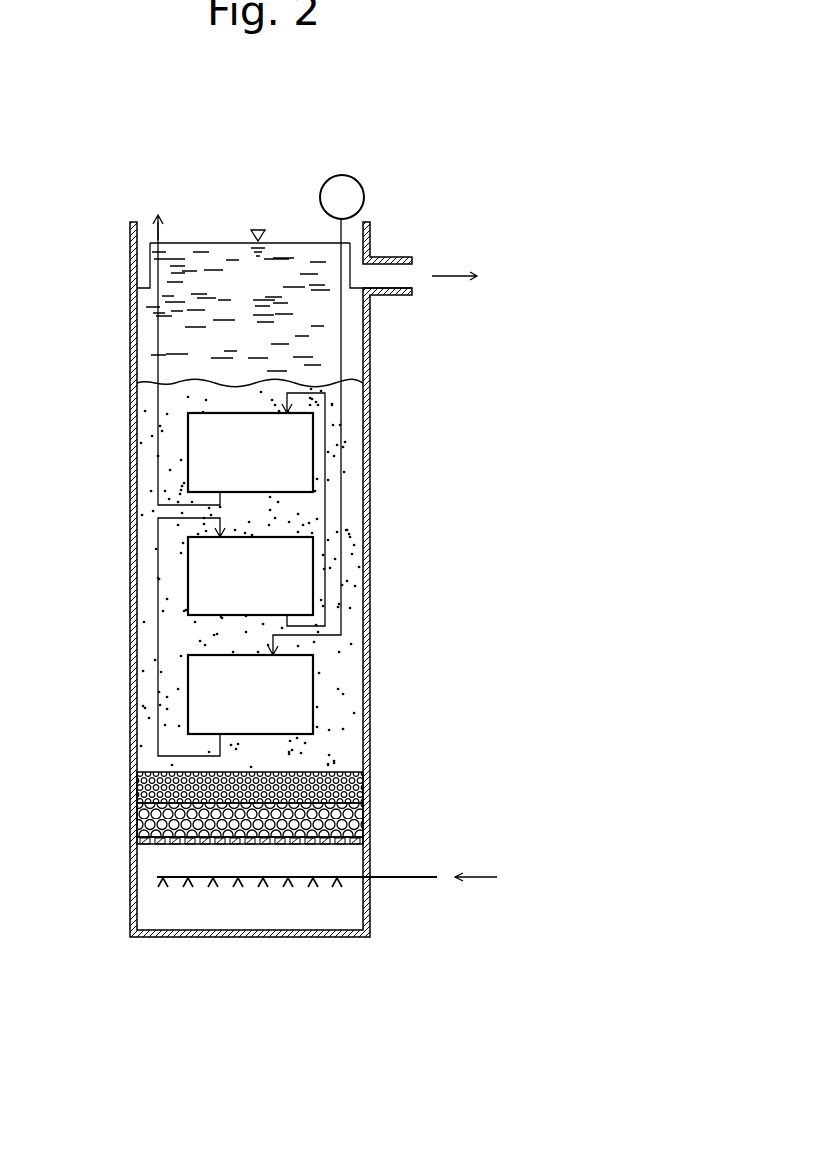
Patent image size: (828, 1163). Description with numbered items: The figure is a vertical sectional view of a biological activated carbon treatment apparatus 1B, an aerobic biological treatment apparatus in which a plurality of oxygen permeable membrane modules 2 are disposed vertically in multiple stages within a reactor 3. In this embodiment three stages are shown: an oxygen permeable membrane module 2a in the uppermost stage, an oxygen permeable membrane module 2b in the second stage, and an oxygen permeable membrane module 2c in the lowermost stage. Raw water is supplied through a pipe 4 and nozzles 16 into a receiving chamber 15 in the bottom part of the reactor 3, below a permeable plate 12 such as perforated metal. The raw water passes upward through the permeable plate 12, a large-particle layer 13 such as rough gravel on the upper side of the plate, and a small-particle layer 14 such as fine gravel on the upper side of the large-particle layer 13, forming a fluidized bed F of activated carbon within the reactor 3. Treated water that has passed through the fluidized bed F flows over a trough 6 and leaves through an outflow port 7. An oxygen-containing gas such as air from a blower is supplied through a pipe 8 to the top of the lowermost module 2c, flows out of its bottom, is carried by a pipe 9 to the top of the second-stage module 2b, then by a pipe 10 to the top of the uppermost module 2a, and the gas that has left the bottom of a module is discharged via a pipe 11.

The biological activated carbon treatment apparatus 1B is at (299, 186).
The oxygen permeable membrane modules 2 is at (250, 573).
The oxygen permeable membrane module in the uppermost stage 2a is at (250, 452).
The oxygen permeable membrane module in the second stage 2b is at (250, 576).
The oxygen permeable membrane module in the lowermost stage 2c is at (250, 694).
The reactor 3 is at (370, 557).
The pipe 4 is at (405, 880).
The trough 6 is at (130, 267).
The outflow port 7 is at (398, 257).
The pipe 8 is at (340, 271).
The pipe 9 is at (158, 630).
The pipe 10 is at (323, 512).
The pipe 11 is at (160, 290).
The permeable plate 12 is at (163, 847).
The large-particle layer 13 is at (137, 820).
The small-particle layer 14 is at (137, 788).
The receiving chamber 15 is at (350, 857).
The nozzles 16 is at (302, 967).
The fluidized bed F is at (347, 694).